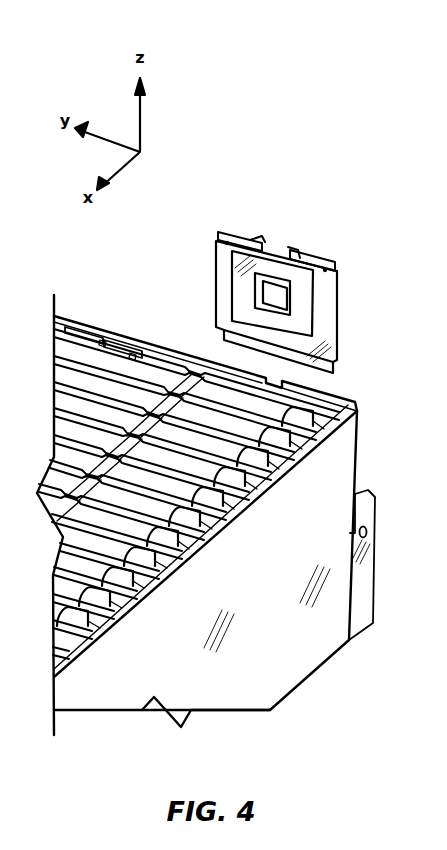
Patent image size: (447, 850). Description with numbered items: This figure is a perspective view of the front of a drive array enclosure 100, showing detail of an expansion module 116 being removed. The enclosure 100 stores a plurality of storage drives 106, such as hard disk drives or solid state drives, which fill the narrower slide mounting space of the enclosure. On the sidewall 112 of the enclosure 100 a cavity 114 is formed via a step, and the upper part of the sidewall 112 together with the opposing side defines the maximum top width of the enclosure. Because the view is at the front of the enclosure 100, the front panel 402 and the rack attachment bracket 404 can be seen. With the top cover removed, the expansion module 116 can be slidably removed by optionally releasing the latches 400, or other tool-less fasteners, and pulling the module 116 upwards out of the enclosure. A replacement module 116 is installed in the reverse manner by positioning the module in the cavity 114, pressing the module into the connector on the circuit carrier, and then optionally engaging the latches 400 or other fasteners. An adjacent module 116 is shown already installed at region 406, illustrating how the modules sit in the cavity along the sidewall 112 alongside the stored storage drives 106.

The drive array enclosure 100 is at (290, 106).
The storage drives 106 is at (236, 490).
The sidewall 112 is at (114, 330).
The cavity 114 is at (186, 357).
The expansion module 116 is at (142, 350).
The latches 400 is at (240, 230).
The front panel 402 is at (263, 690).
The rack attachment bracket 404 is at (367, 612).
The region 406 is at (120, 342).